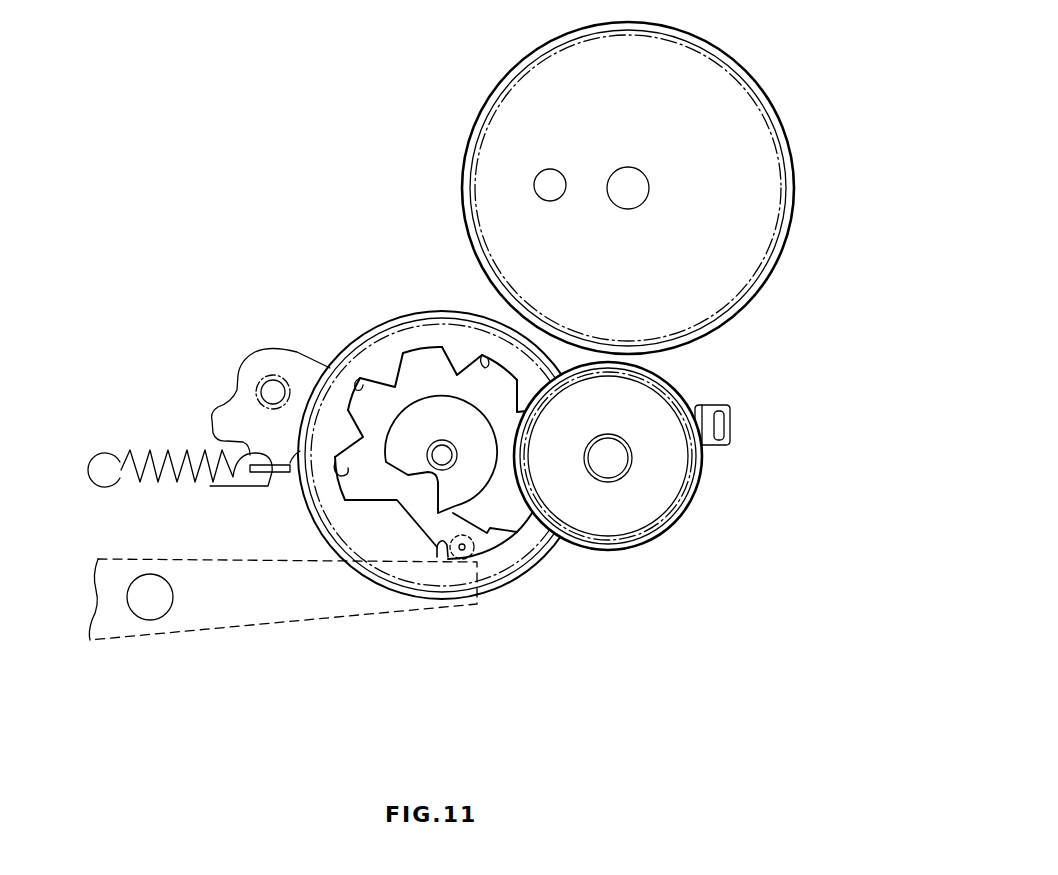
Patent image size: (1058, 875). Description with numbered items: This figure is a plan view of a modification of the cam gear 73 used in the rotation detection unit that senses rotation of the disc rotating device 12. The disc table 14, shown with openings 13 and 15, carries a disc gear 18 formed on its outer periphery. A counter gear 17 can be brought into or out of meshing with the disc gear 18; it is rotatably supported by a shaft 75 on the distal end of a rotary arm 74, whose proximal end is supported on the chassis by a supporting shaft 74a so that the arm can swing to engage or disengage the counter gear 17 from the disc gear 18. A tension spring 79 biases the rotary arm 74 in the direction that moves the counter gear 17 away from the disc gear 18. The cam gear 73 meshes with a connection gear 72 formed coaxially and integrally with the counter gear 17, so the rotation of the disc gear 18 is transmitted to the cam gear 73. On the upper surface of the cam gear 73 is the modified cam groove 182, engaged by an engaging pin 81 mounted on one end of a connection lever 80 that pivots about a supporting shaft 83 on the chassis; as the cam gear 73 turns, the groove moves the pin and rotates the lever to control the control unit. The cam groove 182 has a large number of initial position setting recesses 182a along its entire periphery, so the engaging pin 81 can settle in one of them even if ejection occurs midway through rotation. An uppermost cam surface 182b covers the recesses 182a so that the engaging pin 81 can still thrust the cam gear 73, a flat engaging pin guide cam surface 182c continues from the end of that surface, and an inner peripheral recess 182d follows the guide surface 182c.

The disc rotating device 12 is at (800, 185).
The hole 13 is at (638, 178).
The disc table 14 is at (737, 120).
The hole 15 is at (550, 178).
The counter gear 17 is at (637, 553).
The disc gear 18 is at (778, 237).
The connection gear 72 is at (632, 456).
The cam gear 73 is at (337, 487).
The rotary arm 74 is at (300, 372).
The supporting shaft 74a is at (258, 385).
The shaft 75 is at (612, 462).
The tension spring 79 is at (160, 488).
The connection lever 80 is at (277, 608).
The engaging pin 81 is at (472, 556).
The supporting shaft 83 is at (177, 603).
The cam groove 182 is at (420, 368).
The initial position setting recesses 182a is at (360, 378).
The uppermost cam surface 182b is at (490, 530).
The engaging pin guide cam surface 182c is at (390, 470).
The inner peripheral recess 182d is at (437, 482).